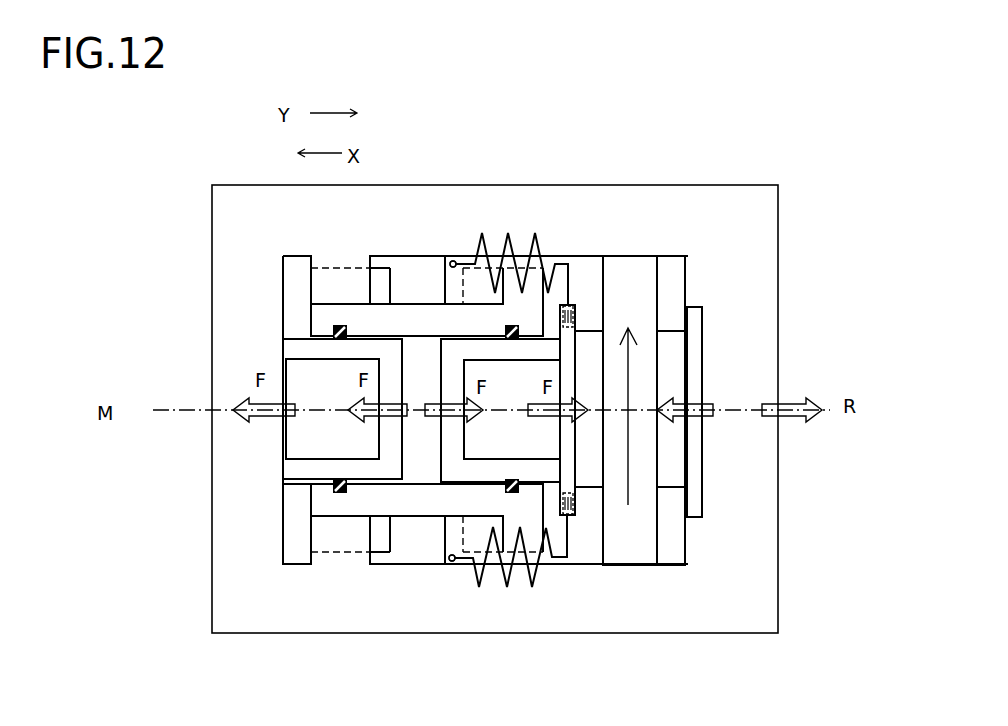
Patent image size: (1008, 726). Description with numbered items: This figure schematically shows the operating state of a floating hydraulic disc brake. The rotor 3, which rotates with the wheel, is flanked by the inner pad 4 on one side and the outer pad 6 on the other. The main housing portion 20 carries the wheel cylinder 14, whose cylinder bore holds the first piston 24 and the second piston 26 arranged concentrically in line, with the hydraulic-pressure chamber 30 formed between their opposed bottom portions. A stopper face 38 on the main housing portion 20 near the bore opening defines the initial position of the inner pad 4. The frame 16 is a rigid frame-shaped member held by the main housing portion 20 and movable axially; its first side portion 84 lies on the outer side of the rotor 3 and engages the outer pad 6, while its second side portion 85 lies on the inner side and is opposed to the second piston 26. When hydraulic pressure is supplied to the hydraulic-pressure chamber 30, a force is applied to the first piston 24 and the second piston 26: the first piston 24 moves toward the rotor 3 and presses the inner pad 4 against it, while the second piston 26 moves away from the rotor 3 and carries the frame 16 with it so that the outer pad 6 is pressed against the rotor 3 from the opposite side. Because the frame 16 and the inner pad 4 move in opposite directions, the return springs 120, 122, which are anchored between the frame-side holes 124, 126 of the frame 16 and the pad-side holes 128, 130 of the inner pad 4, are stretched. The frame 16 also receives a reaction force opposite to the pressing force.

The rotor 3 is at (632, 535).
The inner pad 4 is at (598, 493).
The outer pad 6 is at (670, 318).
The wheel cylinder 14 is at (298, 329).
The frame 16 is at (320, 615).
The main housing portion 20 is at (317, 512).
The first piston 24 is at (452, 358).
The second piston 26 is at (292, 352).
The hydraulic-pressure chamber 30 is at (420, 460).
The stopper face 38 is at (544, 502).
The first side portion 84 is at (775, 293).
The second side portion 85 is at (237, 468).
The return spring 120 is at (540, 248).
The return spring 122 is at (537, 580).
The frame-side hole 124 is at (455, 262).
The frame-side hole 126 is at (454, 561).
The pad-side hole 128 is at (577, 310).
The pad-side hole 130 is at (570, 503).